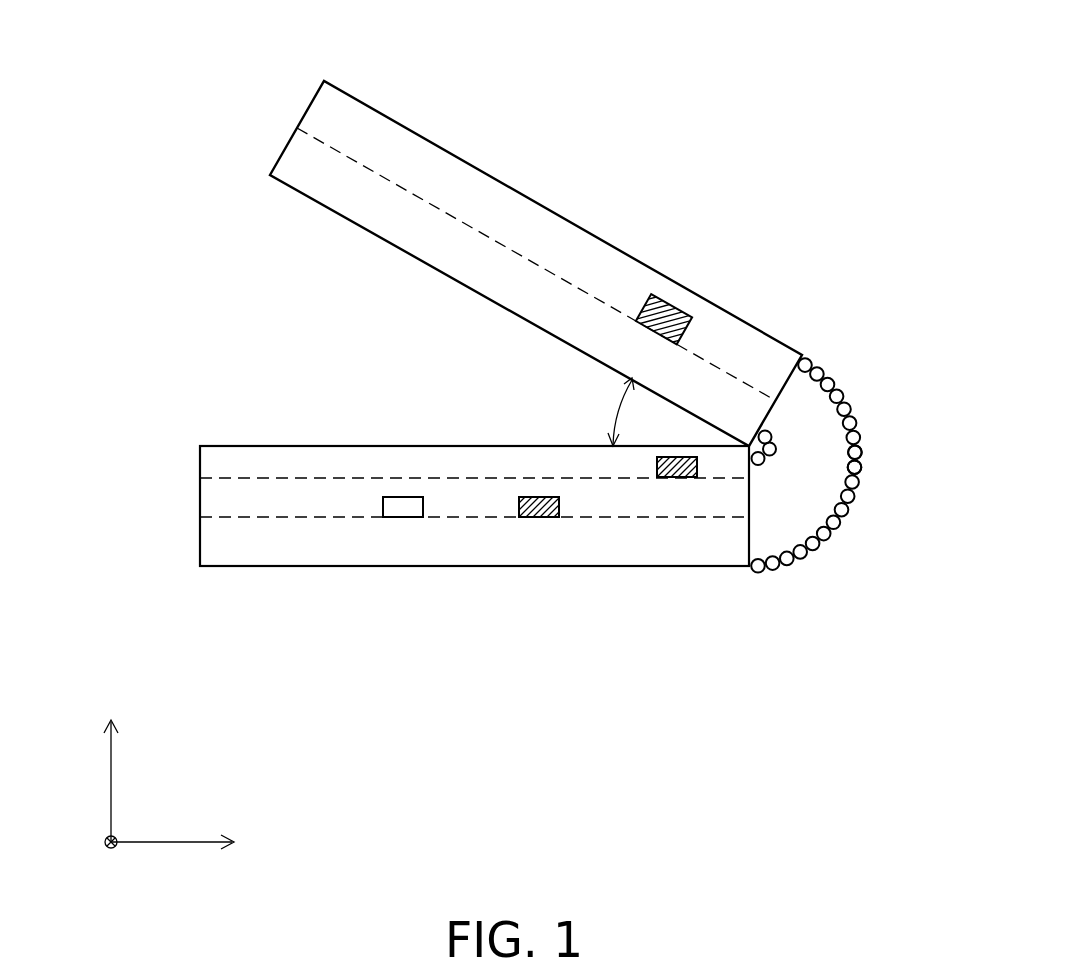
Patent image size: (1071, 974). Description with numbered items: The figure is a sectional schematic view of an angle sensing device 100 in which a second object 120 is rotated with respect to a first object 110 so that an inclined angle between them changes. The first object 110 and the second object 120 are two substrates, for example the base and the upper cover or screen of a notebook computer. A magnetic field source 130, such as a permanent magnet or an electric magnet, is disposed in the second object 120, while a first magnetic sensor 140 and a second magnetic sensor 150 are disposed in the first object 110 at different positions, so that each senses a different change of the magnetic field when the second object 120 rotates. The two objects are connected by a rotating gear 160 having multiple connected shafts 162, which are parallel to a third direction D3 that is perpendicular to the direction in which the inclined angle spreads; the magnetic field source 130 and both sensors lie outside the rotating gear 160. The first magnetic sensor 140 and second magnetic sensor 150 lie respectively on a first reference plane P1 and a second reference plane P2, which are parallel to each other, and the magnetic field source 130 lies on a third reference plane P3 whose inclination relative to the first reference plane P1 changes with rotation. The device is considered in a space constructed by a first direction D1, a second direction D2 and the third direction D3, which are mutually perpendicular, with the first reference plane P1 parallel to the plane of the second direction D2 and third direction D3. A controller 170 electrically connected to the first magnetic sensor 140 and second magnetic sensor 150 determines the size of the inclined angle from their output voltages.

The angle sensing device 100 is at (894, 842).
The first object 110 is at (205, 556).
The second object 120 is at (378, 123).
The magnetic field source 130 is at (672, 302).
The first magnetic sensor 140 is at (538, 505).
The second magnetic sensor 150 is at (677, 466).
The rotating gear 160 is at (848, 408).
The shafts 162 is at (857, 467).
The controller 170 is at (402, 505).
The first reference plane P1 is at (212, 516).
The second reference plane P2 is at (226, 478).
The third reference plane P3 is at (512, 252).
The first direction D1 is at (110, 764).
The second direction D2 is at (188, 845).
The third direction D3 is at (97, 855).